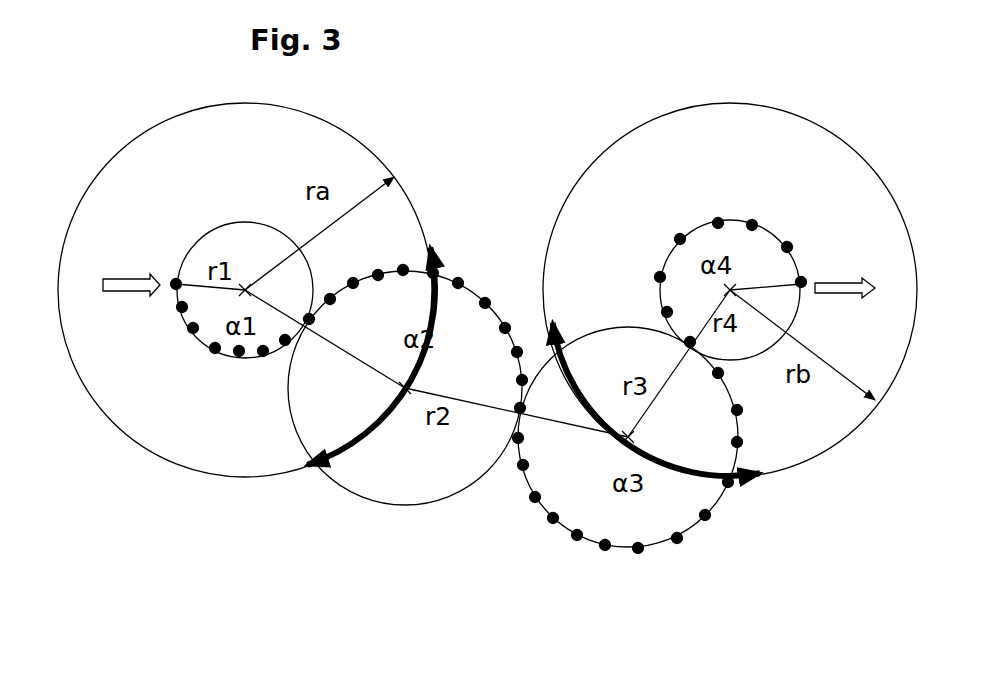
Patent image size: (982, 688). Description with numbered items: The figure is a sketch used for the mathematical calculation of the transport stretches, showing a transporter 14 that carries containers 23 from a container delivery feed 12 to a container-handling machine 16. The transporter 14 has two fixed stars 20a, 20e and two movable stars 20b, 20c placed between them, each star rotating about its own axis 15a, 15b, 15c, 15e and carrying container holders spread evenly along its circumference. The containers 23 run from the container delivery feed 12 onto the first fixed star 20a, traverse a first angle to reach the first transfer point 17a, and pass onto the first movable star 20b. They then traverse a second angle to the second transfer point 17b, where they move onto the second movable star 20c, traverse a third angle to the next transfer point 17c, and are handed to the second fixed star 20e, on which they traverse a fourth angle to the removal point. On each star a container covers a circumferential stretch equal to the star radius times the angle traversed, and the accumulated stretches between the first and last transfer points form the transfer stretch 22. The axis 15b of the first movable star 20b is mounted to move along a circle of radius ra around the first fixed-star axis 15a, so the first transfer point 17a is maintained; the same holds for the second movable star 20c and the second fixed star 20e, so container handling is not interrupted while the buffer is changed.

The container delivery feed 12 is at (132, 282).
The transporter 14 is at (443, 162).
The axis of first fixed star 15a is at (245, 290).
The axis of first movable star 15b is at (405, 388).
The axis of second movable star 15c is at (628, 437).
The axis of second fixed star 15e is at (730, 290).
The container-handling machine 16 is at (843, 281).
The first transfer point 17a is at (309, 319).
The second transfer point 17b is at (520, 408).
The transfer point 17c is at (690, 342).
The first fixed star 20a is at (208, 325).
The first movable star 20b is at (468, 322).
The second movable star 20c is at (678, 515).
The second fixed star 20e is at (706, 228).
The transfer stretch 22 is at (578, 552).
The containers 23 is at (783, 243).